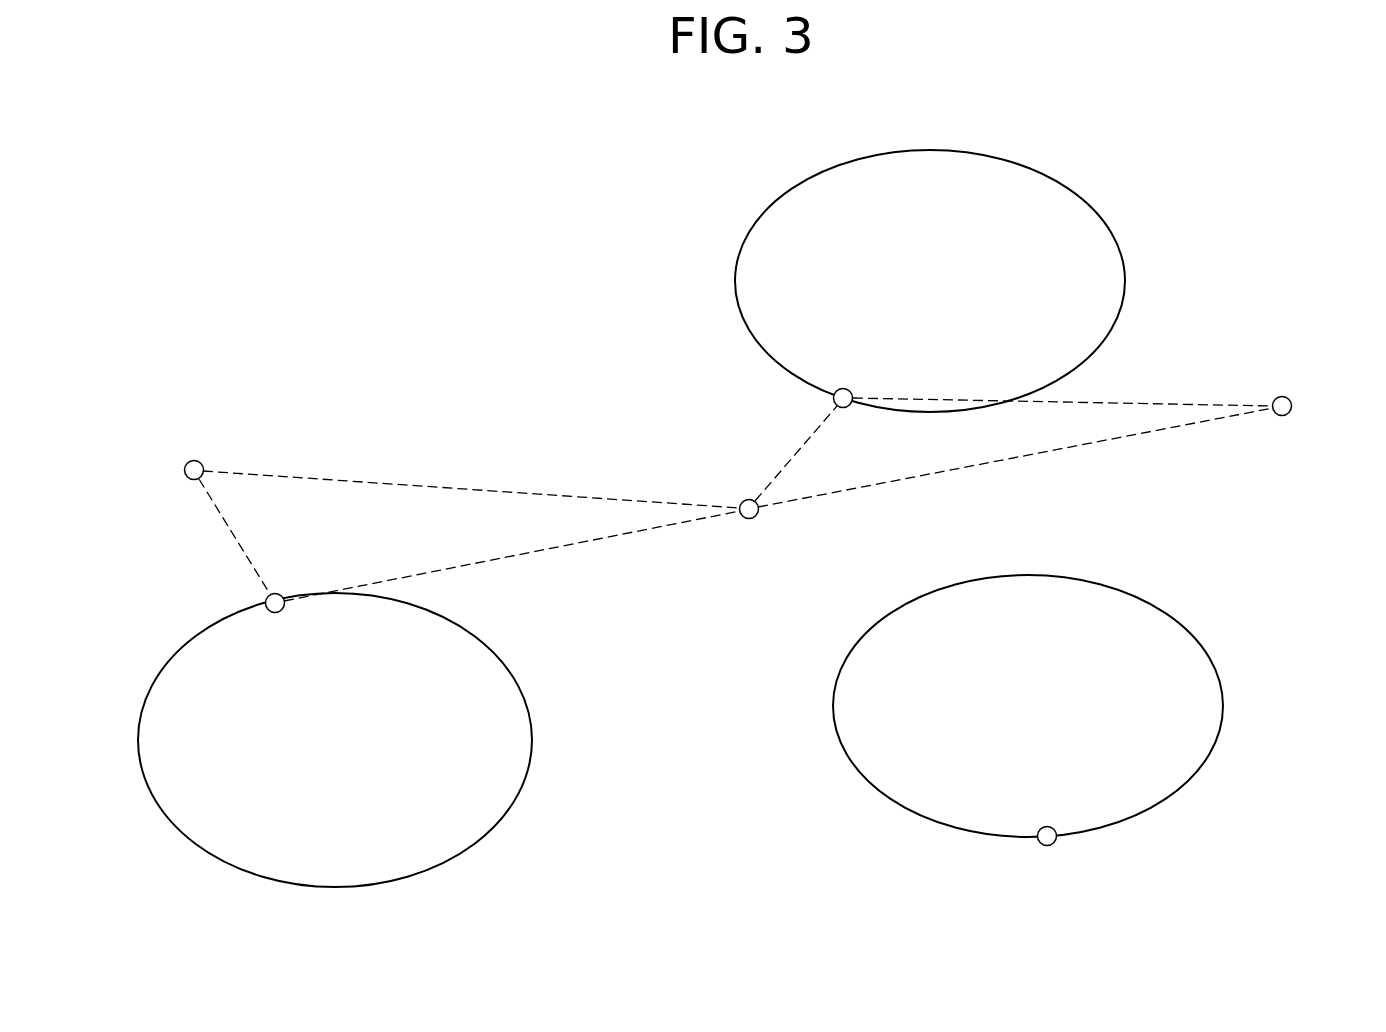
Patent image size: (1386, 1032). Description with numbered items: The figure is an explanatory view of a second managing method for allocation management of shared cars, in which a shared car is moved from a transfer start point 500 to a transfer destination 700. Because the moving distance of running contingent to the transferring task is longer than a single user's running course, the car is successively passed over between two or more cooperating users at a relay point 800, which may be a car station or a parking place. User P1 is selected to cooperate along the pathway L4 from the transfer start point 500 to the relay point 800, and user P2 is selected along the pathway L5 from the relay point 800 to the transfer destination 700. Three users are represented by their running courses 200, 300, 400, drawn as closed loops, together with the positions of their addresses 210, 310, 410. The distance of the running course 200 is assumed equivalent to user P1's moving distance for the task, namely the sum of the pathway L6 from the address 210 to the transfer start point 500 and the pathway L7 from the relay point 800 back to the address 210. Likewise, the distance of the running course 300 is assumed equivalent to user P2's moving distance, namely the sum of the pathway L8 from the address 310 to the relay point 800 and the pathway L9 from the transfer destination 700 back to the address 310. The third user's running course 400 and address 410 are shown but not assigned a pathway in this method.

The running course 200 is at (470, 857).
The address 210 is at (275, 613).
The running course 300 is at (1053, 180).
The address 310 is at (843, 388).
The running course 400 is at (1218, 740).
The address 410 is at (1046, 846).
The transfer start point 500 is at (194, 458).
The transfer destination 700 is at (1286, 396).
The relay point 800 is at (746, 519).
The pathway L4 is at (412, 485).
The pathway L5 is at (1002, 462).
The pathway L6 is at (243, 553).
The pathway L7 is at (503, 560).
The pathway L8 is at (792, 458).
The pathway L9 is at (1130, 400).